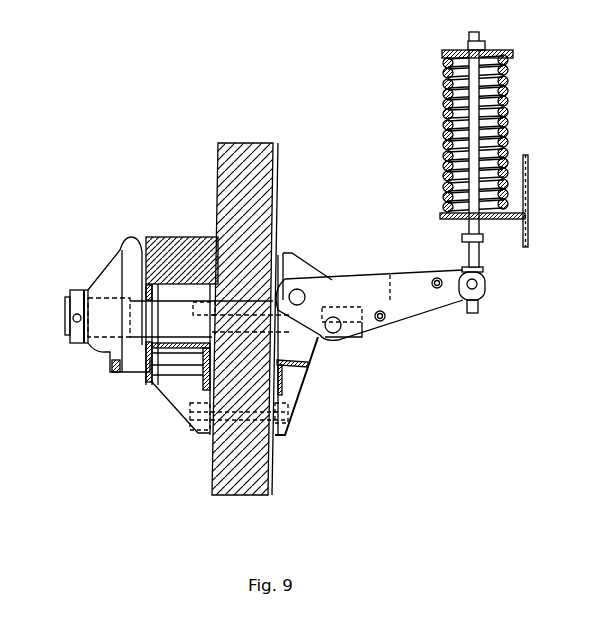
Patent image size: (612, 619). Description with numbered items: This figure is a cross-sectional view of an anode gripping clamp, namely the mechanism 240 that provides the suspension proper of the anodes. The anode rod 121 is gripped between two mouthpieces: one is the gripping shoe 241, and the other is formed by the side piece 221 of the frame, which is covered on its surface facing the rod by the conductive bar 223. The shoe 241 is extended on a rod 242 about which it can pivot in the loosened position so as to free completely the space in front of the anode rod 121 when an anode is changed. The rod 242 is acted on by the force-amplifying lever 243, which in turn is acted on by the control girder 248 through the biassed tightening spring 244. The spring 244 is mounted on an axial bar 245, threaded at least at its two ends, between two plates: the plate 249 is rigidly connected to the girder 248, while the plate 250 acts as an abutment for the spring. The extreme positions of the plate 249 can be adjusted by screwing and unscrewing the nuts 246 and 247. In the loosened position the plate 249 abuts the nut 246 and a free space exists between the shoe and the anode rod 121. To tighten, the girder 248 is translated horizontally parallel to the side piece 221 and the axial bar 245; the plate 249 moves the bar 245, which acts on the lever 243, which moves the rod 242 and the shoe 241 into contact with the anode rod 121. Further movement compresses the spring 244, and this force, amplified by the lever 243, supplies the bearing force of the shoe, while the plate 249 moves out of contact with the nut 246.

The anode rod 121 is at (178, 252).
The side piece of the frame 221 is at (278, 199).
The conductive bar 223 is at (255, 163).
The mechanism 240 is at (99, 236).
The gripping shoe 241 is at (100, 353).
The rod 242 is at (282, 368).
The force-amplifying lever 243 is at (390, 287).
The tightening spring 244 is at (508, 82).
The axial bar 245 is at (503, 106).
The nut 246 is at (485, 242).
The nut 247 is at (487, 49).
The control girder 248 is at (528, 177).
The plate 249 is at (447, 222).
The plate 250 is at (458, 52).